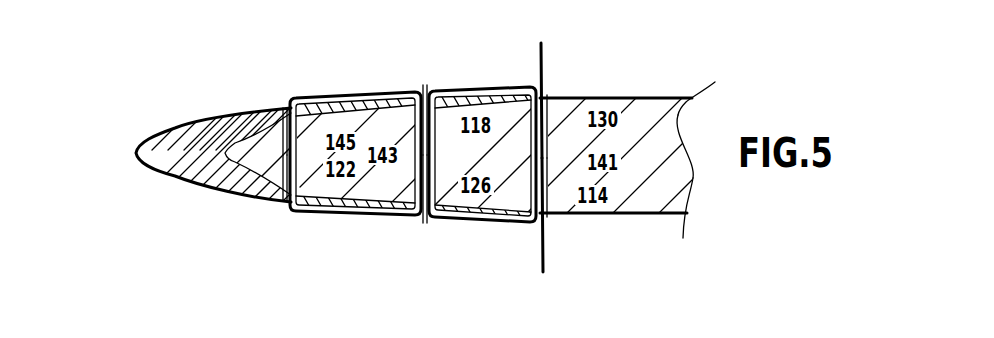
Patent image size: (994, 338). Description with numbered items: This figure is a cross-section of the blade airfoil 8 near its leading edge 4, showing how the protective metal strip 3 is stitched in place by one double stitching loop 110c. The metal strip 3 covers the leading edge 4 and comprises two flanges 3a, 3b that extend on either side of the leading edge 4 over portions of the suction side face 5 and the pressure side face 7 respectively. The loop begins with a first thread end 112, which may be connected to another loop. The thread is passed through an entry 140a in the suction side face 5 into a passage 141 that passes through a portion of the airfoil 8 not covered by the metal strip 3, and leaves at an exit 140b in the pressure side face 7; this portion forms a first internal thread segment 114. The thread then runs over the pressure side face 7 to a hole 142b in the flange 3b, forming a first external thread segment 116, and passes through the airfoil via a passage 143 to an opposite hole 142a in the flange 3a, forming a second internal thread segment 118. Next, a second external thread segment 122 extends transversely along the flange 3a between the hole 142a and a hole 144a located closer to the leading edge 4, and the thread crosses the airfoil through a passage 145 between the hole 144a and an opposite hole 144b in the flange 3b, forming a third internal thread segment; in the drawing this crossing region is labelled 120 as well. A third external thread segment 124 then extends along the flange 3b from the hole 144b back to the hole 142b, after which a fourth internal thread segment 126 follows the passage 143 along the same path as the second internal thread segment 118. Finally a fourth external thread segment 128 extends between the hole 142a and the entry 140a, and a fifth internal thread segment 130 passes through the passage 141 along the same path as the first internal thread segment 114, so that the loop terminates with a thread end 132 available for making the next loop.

The metal strip 3 is at (134, 154).
The flange 3a is at (235, 195).
The flange 3b is at (248, 110).
The leading edge 4 is at (227, 150).
The suction side face 5 is at (652, 218).
The pressure side face 7 is at (657, 97).
The airfoil 8 is at (663, 140).
The double stitching loop 110c is at (223, 237).
The first thread end 112 is at (545, 260).
The first internal thread segment 114 is at (546, 190).
The first external thread segment 116 is at (478, 88).
The second internal thread segment 118 is at (430, 113).
The first module inner wall 120 is at (370, 216).
The second external thread segment 122 is at (298, 188).
The third external thread segment 124 is at (357, 92).
The fourth internal thread segment 126 is at (430, 197).
The fourth external thread segment 128 is at (483, 225).
The fifth internal thread segment 130 is at (546, 112).
The thread end 132 is at (544, 56).
The entry 140a is at (546, 217).
The exit 140b is at (546, 95).
The passage 141 is at (546, 158).
The hole 142a is at (423, 222).
The hole 142b is at (423, 88).
The passage 143 is at (418, 155).
The hole 144a is at (285, 200).
The hole 144b is at (283, 108).
The passage 145 is at (297, 137).